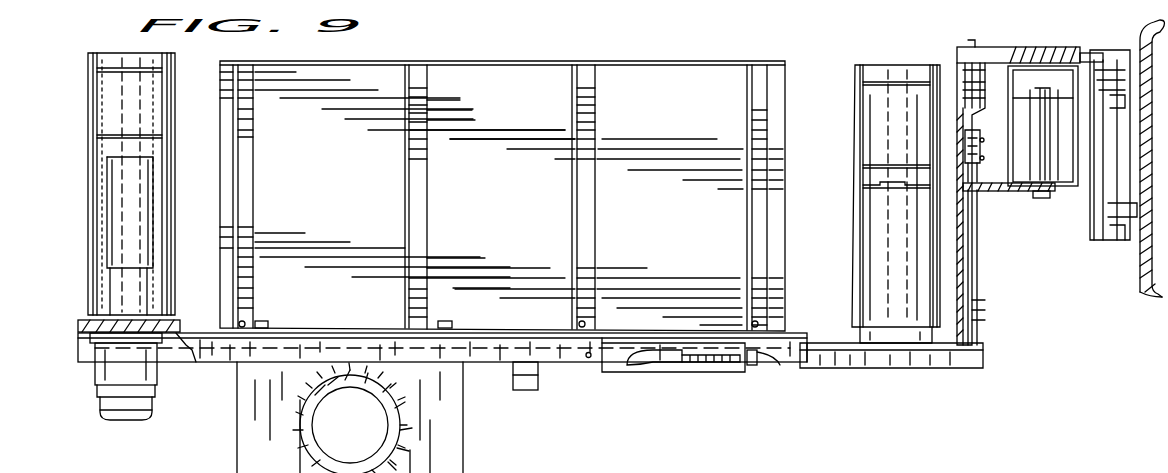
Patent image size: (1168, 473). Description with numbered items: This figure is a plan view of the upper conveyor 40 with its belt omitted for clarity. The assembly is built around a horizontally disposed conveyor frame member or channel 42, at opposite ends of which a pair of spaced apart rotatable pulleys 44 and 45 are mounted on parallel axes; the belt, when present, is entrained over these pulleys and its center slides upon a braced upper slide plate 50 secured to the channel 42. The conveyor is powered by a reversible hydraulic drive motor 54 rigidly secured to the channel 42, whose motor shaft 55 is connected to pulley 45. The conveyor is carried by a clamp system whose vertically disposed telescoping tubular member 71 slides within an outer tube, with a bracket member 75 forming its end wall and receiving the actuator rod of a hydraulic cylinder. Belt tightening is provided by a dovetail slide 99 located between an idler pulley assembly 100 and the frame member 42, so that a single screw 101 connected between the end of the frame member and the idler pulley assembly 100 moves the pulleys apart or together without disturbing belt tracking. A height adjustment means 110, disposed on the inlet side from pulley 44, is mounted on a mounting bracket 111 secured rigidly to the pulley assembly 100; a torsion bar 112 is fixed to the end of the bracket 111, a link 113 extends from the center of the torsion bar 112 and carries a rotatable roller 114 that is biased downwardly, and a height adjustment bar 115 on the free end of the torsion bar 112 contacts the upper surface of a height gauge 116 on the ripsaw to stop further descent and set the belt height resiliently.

The upper conveyor 40 is at (572, 380).
The conveyor frame member or channel 42 is at (503, 368).
The pulley 44 is at (855, 85).
The pulley 45 is at (98, 95).
The upper slide plate 50 is at (514, 116).
The reversible hydraulic drive motor 54 is at (98, 400).
The motor shaft 55 is at (120, 213).
The telescoping tubular member 71 is at (398, 418).
The bracket member 75 is at (276, 451).
The dovetail slide 99 is at (710, 382).
The idler pulley assembly 100 is at (850, 370).
The screw 101 is at (770, 368).
The height adjustment means 110 is at (1094, 42).
The mounting bracket 111 is at (978, 325).
The torsion bar 112 is at (985, 258).
The link 113 is at (990, 195).
The roller 114 is at (1003, 78).
The height adjustment bar 115 is at (1030, 63).
The height gauge 116 is at (1103, 242).